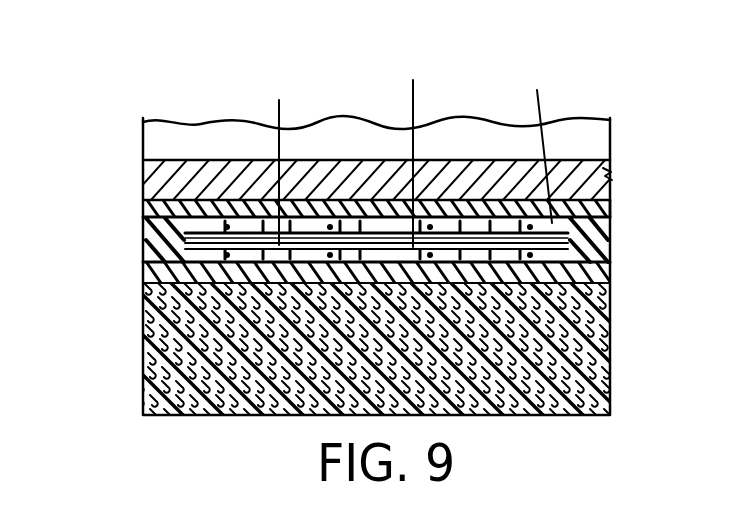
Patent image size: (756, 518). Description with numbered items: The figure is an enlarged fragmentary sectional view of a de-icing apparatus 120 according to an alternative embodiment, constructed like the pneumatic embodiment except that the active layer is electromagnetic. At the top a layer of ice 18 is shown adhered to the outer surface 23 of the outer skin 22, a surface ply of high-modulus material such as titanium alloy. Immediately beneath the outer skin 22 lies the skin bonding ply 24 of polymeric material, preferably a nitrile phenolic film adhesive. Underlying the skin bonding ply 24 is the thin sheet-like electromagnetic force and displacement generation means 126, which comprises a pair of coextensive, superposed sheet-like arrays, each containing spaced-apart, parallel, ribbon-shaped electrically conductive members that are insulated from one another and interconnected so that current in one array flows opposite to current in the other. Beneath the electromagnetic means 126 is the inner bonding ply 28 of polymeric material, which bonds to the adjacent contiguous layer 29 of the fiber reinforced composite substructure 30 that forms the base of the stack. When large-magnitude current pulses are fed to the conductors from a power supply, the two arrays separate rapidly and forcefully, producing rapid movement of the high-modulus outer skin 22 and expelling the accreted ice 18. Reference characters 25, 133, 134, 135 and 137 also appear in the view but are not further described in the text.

The layer of ice 18 is at (337, 140).
The outer skin 22 is at (148, 183).
The outer surface 23 is at (568, 153).
The skin bonding ply 24 is at (143, 212).
The edge portion 25 is at (612, 213).
The inner bonding ply 28 is at (147, 280).
The contiguous layer 29 is at (147, 293).
The fiber reinforced composite substructure 30 is at (147, 372).
The de-icing apparatus 120 is at (628, 147).
The electromagnetic force and displacement generation means 126 is at (134, 217).
The end cap 133 is at (585, 251).
The section line 134 is at (303, 156).
The section line 135 is at (426, 144).
The section line 137 is at (538, 137).